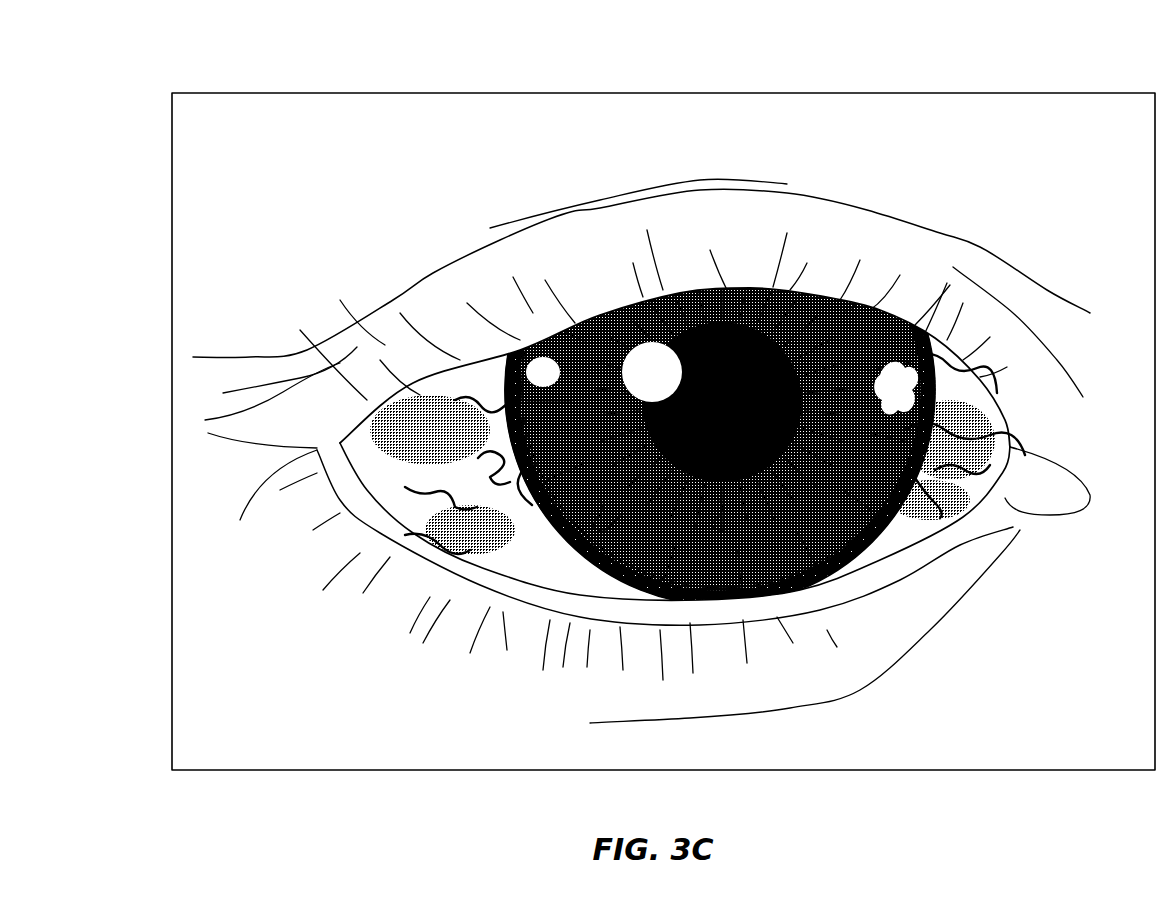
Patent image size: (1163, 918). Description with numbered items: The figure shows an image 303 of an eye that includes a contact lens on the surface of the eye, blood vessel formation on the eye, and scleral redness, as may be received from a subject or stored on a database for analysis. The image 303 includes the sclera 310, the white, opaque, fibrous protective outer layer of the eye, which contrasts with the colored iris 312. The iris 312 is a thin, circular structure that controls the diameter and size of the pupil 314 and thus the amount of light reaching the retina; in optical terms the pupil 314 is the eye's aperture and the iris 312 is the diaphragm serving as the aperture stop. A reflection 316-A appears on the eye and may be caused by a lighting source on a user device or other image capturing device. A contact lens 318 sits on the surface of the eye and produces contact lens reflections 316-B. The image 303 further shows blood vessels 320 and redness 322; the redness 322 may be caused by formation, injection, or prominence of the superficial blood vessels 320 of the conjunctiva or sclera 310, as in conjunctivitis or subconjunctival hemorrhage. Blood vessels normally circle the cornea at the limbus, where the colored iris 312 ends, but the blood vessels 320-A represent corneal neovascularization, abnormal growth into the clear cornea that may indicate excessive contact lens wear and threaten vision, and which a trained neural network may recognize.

The image 303 is at (172, 160).
The sclera 310 is at (476, 445).
The iris 312 is at (610, 437).
The pupil 314 is at (726, 312).
The reflection 316-A is at (650, 363).
The contact lens reflections 316-B is at (518, 358).
The contact lens 318 is at (522, 485).
The blood vessels 320 is at (407, 487).
The blood vessels (corneal neovascularization) 320-A is at (604, 534).
The redness 322 is at (350, 455).